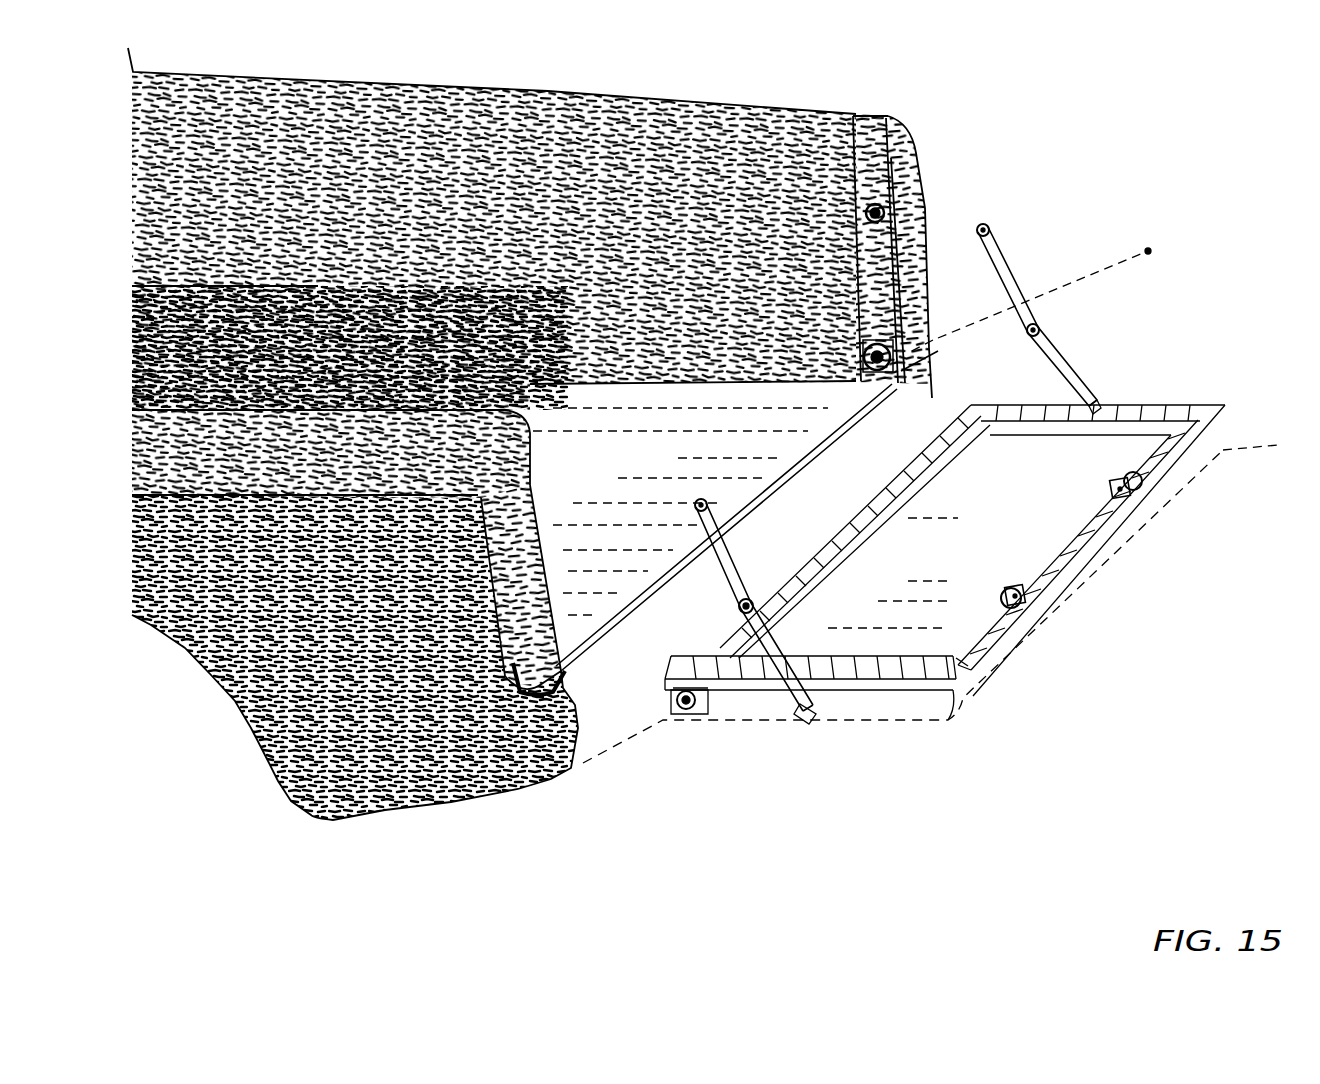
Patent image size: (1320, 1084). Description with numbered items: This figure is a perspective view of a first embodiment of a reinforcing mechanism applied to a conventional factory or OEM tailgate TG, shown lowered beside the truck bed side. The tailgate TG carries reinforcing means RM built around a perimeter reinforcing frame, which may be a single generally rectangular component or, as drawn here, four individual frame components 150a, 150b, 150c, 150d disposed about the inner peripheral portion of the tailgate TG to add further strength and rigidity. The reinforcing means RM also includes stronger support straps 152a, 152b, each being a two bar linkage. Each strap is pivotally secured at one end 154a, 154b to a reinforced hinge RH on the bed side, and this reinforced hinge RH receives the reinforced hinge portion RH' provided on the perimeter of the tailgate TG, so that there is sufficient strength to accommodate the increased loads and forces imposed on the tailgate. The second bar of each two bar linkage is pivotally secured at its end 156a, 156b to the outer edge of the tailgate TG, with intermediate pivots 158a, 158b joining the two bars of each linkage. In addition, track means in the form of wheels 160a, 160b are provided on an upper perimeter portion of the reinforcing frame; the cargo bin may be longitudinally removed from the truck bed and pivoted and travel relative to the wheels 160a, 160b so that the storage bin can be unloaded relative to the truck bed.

The perimeter reinforcing frame component 150a is at (1085, 530).
The perimeter reinforcing frame component 150b is at (828, 652).
The perimeter reinforcing frame component 150c is at (862, 495).
The perimeter reinforcing frame component 150d is at (1150, 410).
The support strap 152a is at (714, 567).
The support strap 152b is at (1010, 248).
The support strap end 154a is at (690, 494).
The support strap end 154b is at (977, 212).
The second bar end 156a is at (800, 708).
The second bar end 156b is at (1098, 390).
The left intermediate pivot 158a is at (740, 590).
The right intermediate pivot 158b is at (1040, 318).
The wheel 160a is at (993, 583).
The wheel 160b is at (1112, 470).
The reinforced hinge RH is at (770, 297).
The reinforced hinge portion RH' is at (656, 823).
The reinforcing means RM is at (948, 650).
The tailgate TG is at (852, 698).